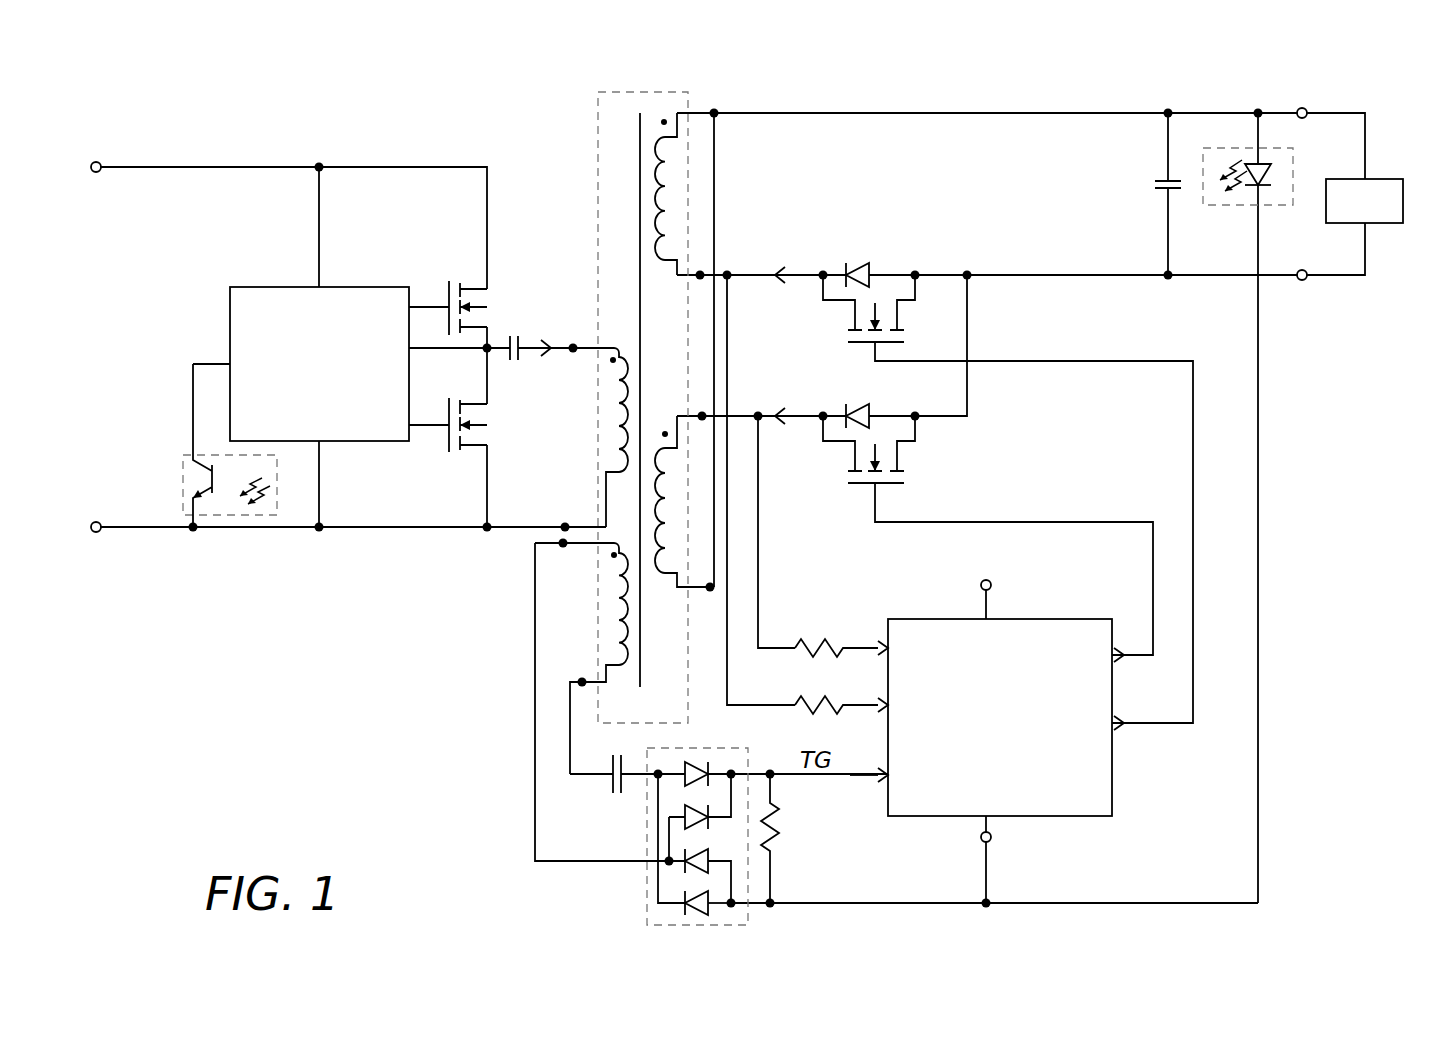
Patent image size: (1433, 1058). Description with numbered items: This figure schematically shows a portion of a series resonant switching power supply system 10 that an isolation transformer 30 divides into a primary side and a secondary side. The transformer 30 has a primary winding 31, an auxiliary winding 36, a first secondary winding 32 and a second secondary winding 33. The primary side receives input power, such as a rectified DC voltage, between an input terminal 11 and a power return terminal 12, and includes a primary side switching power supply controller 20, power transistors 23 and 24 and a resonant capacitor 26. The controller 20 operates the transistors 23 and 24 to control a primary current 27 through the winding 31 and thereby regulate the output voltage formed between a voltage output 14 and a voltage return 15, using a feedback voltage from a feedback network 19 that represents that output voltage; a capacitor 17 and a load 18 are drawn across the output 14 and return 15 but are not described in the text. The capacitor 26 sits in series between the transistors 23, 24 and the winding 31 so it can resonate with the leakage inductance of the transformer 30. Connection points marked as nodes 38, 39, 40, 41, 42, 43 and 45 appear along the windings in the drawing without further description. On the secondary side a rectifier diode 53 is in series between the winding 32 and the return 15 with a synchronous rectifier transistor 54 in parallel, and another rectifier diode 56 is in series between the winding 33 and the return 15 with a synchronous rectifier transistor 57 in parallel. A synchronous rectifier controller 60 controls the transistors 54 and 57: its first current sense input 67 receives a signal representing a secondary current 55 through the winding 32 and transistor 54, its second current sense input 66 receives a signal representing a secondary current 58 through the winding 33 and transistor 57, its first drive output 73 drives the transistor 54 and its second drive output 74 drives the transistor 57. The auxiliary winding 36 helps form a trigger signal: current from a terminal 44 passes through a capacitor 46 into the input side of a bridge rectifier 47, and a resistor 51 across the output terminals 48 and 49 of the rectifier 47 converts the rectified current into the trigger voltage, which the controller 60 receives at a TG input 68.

The series resonant switching power supply system 10 is at (323, 670).
The input terminal 11 is at (99, 162).
The power return terminal 12 is at (99, 522).
The voltage output 14 is at (1306, 110).
The voltage return 15 is at (1306, 279).
The output capacitor 17 is at (1156, 183).
The load 18 is at (1386, 178).
The feedback network 19 is at (182, 478).
The primary side switching power supply controller 20 is at (238, 286).
The power transistor 23 is at (449, 293).
The power transistor 24 is at (449, 410).
The resonant capacitor 26 is at (512, 336).
The primary current 27 is at (548, 358).
The isolation transformer 30 is at (598, 128).
The primary winding 31 is at (619, 348).
The first secondary winding 32 is at (665, 262).
The second secondary winding 33 is at (677, 590).
The auxiliary winding 36 is at (612, 680).
The primary winding node 38 is at (573, 343).
The primary return node 39 is at (565, 522).
The output node 40 is at (716, 110).
The first secondary node 41 is at (702, 272).
The second secondary node 42 is at (704, 414).
The secondary center tap node 43 is at (710, 592).
The terminal 44 is at (563, 548).
The auxiliary winding node 45 is at (582, 677).
The capacitor 46 is at (616, 794).
The bridge rectifier 47 is at (650, 926).
The output terminal 48 is at (770, 770).
The output terminal 49 is at (772, 907).
The resistor 51 is at (779, 830).
The rectifier diode 53 is at (850, 264).
The synchronous rectifier transistor 54 is at (845, 333).
The secondary current 55 is at (780, 267).
The rectifier diode 56 is at (850, 405).
The synchronous rectifier transistor 57 is at (845, 476).
The secondary current 58 is at (780, 408).
The synchronous rectifier controller 60 is at (1050, 818).
The second current sense input 66 is at (873, 645).
The first current sense input 67 is at (873, 702).
The TG input 68 is at (873, 772).
The first drive output 73 is at (1126, 730).
The second drive output 74 is at (1126, 663).